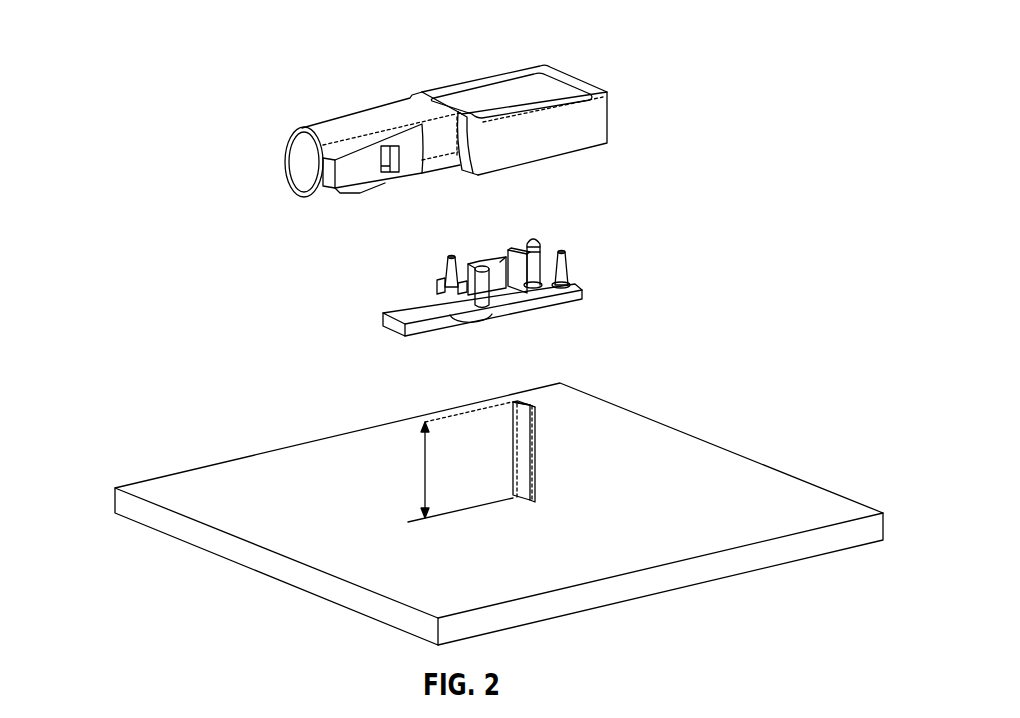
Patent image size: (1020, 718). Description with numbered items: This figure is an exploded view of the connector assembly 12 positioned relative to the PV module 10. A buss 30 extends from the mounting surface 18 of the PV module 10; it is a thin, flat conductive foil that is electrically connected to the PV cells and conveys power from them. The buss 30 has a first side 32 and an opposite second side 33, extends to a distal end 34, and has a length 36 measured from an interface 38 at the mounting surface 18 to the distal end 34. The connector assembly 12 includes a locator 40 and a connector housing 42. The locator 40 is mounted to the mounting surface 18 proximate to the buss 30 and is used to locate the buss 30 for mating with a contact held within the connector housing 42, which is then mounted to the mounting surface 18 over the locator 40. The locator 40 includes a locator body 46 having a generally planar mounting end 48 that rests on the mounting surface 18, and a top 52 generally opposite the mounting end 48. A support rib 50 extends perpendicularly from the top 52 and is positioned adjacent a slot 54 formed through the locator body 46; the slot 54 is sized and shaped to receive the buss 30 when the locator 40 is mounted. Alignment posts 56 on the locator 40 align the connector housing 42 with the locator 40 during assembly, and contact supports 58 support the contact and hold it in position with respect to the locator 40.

The PV module 10 is at (204, 431).
The connector assembly 12 is at (361, 62).
The mounting surface 18 is at (745, 480).
The buss 30 is at (525, 452).
The first side 32 is at (535, 482).
The second side 33 is at (522, 485).
The distal end 34 is at (522, 398).
The length 36 is at (424, 464).
The interface 38 is at (525, 502).
The locator 40 is at (400, 315).
The connector housing 42 is at (595, 125).
The locator body 46 is at (517, 298).
The mounting end 48 is at (505, 323).
The support rib 50 is at (513, 248).
The top 52 is at (543, 265).
The slot 54 is at (548, 281).
The alignment posts 56 is at (567, 275).
The contact supports 58 is at (407, 277).